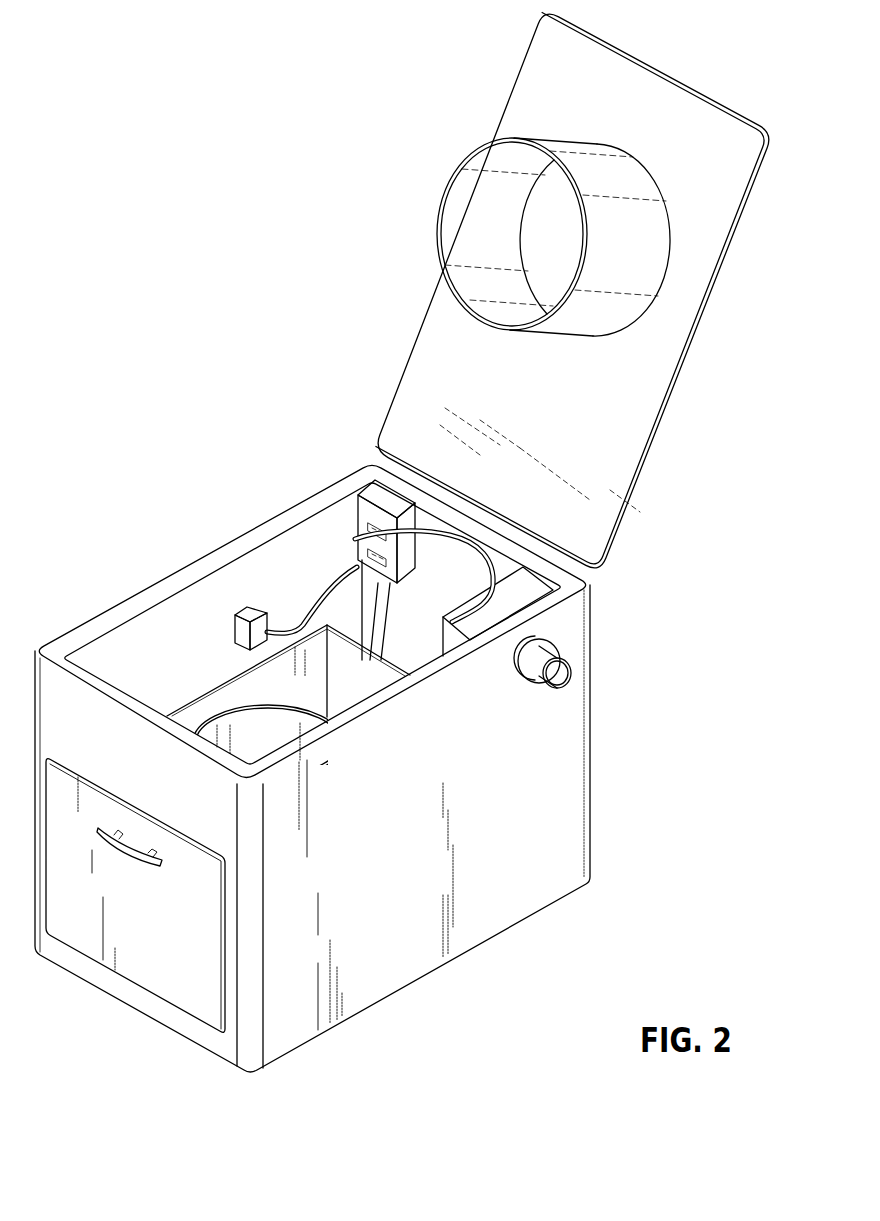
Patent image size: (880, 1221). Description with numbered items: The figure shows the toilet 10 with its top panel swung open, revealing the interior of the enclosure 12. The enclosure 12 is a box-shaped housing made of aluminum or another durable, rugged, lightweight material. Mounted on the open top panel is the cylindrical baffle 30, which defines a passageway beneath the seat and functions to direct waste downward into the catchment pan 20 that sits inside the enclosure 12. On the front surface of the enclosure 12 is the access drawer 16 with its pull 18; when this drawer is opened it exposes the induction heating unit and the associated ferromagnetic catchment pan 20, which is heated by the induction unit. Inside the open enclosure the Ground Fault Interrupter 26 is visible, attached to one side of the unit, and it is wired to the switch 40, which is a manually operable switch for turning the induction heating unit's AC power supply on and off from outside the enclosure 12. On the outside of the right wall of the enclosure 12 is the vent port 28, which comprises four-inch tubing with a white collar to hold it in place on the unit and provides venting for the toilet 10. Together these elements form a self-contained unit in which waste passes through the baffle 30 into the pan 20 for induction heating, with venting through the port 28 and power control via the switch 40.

The toilet 10 is at (192, 490).
The enclosure 12 is at (545, 828).
The access drawer 16 is at (180, 968).
The pull 18 is at (124, 857).
The catchment pan 20 is at (245, 723).
The Ground Fault Interrupter 26 is at (367, 512).
The vent port 28 is at (537, 688).
The cylindrical baffle 30 is at (487, 214).
The switch 40 is at (252, 613).